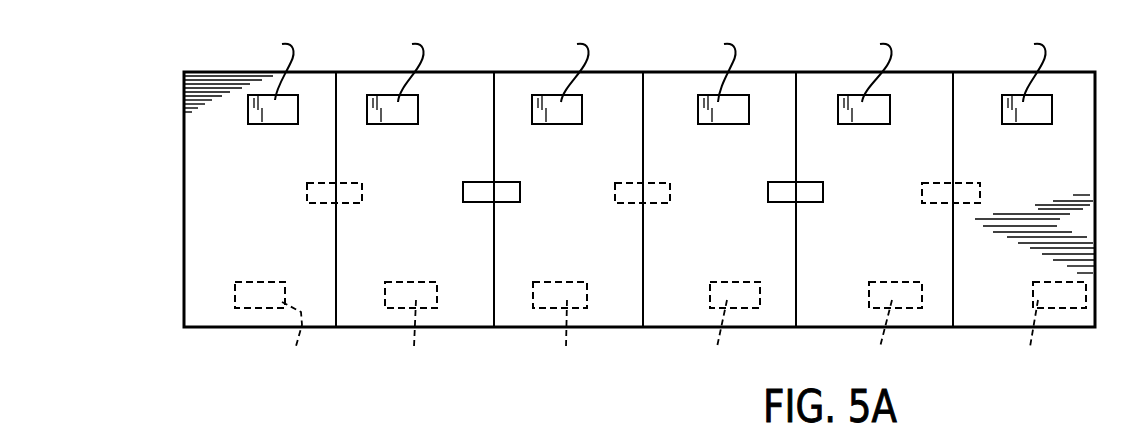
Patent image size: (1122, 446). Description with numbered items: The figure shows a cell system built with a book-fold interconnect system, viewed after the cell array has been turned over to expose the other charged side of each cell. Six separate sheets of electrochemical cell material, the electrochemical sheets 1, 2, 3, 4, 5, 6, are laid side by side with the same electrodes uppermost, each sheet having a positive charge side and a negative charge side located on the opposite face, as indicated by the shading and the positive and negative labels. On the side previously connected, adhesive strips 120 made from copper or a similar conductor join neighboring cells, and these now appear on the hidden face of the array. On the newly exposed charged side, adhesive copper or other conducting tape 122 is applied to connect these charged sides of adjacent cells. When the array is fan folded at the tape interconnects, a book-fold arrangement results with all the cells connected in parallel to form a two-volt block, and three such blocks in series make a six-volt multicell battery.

The electrochemical sheet 1 is at (251, 209).
The electrochemical sheet 2 is at (402, 209).
The electrochemical sheet 3 is at (559, 209).
The electrochemical sheet 4 is at (712, 209).
The electrochemical sheet 5 is at (857, 209).
The electrochemical sheet 6 is at (1012, 209).
The adhesive strips 120 is at (307, 203).
The adhesive conducting tape 122 is at (466, 201).